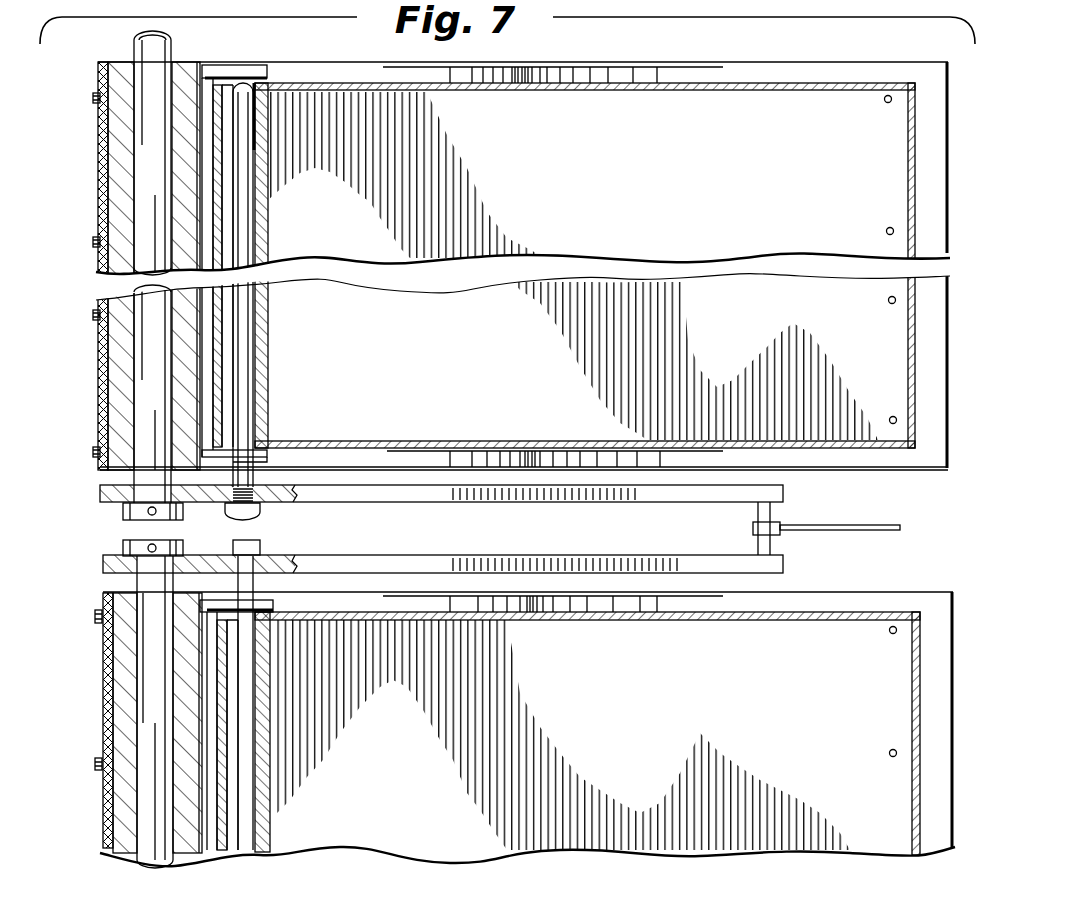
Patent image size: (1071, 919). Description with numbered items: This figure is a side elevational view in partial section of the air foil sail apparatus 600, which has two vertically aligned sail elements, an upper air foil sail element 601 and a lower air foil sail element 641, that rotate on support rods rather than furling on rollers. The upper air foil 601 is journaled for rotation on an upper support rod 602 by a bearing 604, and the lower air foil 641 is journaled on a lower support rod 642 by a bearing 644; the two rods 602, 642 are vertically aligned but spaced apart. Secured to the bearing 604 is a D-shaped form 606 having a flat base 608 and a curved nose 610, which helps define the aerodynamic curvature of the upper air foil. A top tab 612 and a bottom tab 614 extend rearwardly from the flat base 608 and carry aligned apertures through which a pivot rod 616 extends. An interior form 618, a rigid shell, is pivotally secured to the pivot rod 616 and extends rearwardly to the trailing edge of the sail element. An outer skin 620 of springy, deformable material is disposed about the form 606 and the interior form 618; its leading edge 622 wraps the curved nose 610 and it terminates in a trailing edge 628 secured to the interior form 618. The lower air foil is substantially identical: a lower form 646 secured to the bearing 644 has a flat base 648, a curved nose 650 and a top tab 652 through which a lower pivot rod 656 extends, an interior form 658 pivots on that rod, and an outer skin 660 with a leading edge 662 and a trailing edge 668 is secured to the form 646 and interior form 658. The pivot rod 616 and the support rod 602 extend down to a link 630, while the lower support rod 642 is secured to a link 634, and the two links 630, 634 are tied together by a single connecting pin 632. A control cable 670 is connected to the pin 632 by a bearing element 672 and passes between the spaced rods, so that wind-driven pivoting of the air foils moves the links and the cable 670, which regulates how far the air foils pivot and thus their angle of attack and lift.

The air foil sail apparatus 600 is at (772, 52).
The upper air foil sail element 601 is at (677, 62).
The upper support rod 602 is at (132, 45).
The bearing 604 is at (180, 76).
The form 606 is at (96, 52).
The flat base 608 is at (206, 72).
The curved nose 610 is at (98, 113).
The top tab 612 is at (273, 78).
The bottom tab 614 is at (277, 455).
The pivot rod 616 is at (246, 152).
The interior form 618 is at (562, 100).
The outer skin 620 is at (867, 67).
The leading edge 622 is at (98, 152).
The trailing edge 628 is at (940, 200).
The link 630 is at (364, 497).
The connecting pin 632 is at (770, 542).
The link 634 is at (647, 531).
The lower air foil sail element 641 is at (873, 596).
The lower support rod 642 is at (135, 583).
The bearing 644 is at (123, 683).
The lower form 646 is at (105, 862).
The flat base 648 is at (212, 600).
The curved nose 650 is at (100, 627).
The top tab 652 is at (280, 603).
The lower pivot rod 656 is at (253, 687).
The interior form 658 is at (813, 623).
The outer skin 660 is at (940, 672).
The leading edge 662 is at (100, 648).
The trailing edge 668 is at (953, 603).
The control cable 670 is at (856, 525).
The bearing element 672 is at (783, 520).